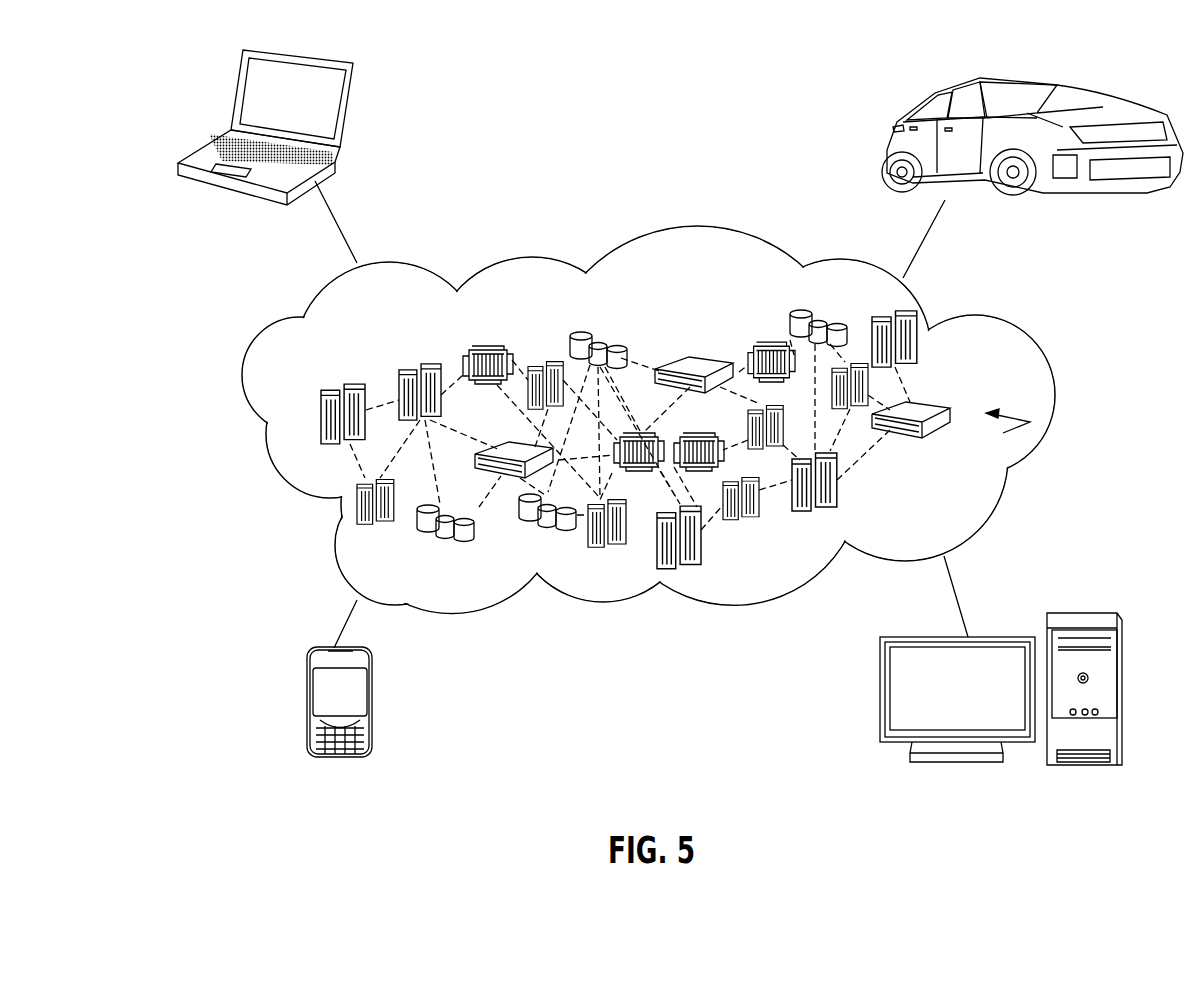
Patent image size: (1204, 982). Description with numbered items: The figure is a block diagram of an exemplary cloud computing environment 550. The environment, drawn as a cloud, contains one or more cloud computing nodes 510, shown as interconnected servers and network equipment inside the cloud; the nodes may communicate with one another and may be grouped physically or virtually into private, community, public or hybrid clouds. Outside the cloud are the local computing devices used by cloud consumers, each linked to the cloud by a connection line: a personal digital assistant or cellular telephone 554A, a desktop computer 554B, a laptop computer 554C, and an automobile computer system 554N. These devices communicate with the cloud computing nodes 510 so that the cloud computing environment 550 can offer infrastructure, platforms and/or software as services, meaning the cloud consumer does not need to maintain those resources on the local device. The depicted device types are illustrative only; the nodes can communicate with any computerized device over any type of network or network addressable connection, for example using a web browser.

The cloud computing environment 550 is at (1010, 331).
The cloud computing nodes 510 is at (1003, 433).
The cellular telephone 554A is at (308, 707).
The desktop computer 554B is at (1087, 612).
The laptop computer 554C is at (345, 114).
The automobile computer system 554N is at (890, 122).